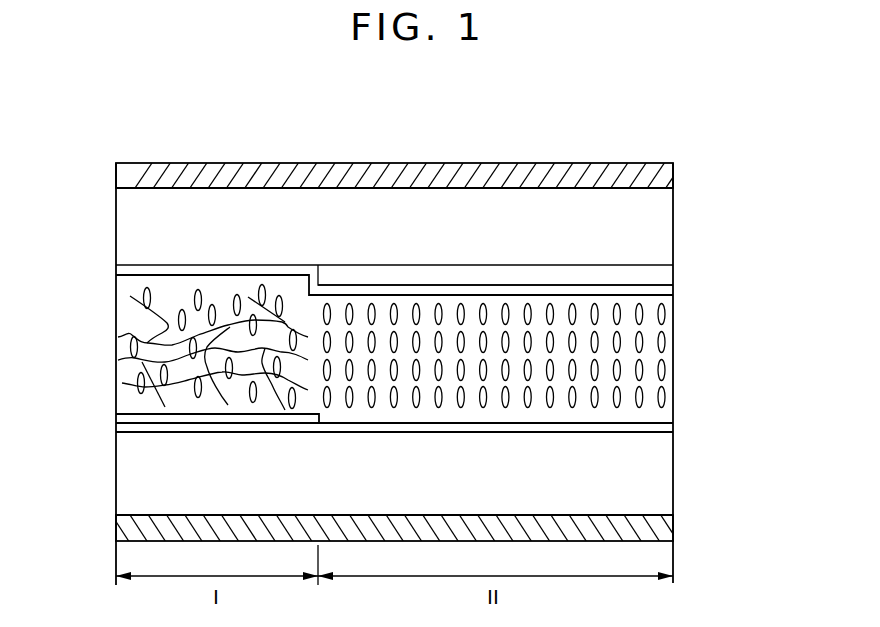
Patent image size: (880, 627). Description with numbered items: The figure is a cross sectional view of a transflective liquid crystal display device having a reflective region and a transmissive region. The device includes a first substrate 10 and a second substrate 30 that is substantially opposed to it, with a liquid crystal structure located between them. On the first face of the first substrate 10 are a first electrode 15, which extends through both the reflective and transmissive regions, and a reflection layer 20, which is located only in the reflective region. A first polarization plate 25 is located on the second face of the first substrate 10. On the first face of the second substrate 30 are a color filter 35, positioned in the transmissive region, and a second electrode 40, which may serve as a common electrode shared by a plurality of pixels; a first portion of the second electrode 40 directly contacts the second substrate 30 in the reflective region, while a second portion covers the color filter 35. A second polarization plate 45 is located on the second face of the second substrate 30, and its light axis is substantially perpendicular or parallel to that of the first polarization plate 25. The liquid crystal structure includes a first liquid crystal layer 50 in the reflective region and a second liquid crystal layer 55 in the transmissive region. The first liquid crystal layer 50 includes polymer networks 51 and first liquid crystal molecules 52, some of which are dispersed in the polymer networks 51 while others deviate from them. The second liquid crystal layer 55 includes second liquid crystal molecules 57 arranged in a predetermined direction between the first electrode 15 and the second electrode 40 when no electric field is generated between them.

The first substrate 10 is at (668, 476).
The first electrode 15 is at (672, 430).
The reflection layer 20 is at (120, 418).
The first polarization plate 25 is at (670, 527).
The second substrate 30 is at (672, 203).
The color filter 35 is at (668, 273).
The second electrode 40 is at (670, 293).
The second polarization plate 45 is at (672, 172).
The first liquid crystal layer 50 is at (163, 348).
The polymer networks 51 is at (60, 287).
The first liquid crystal molecules 52 is at (127, 342).
The second liquid crystal layer 55 is at (547, 358).
The second liquid crystal molecules 57 is at (664, 341).